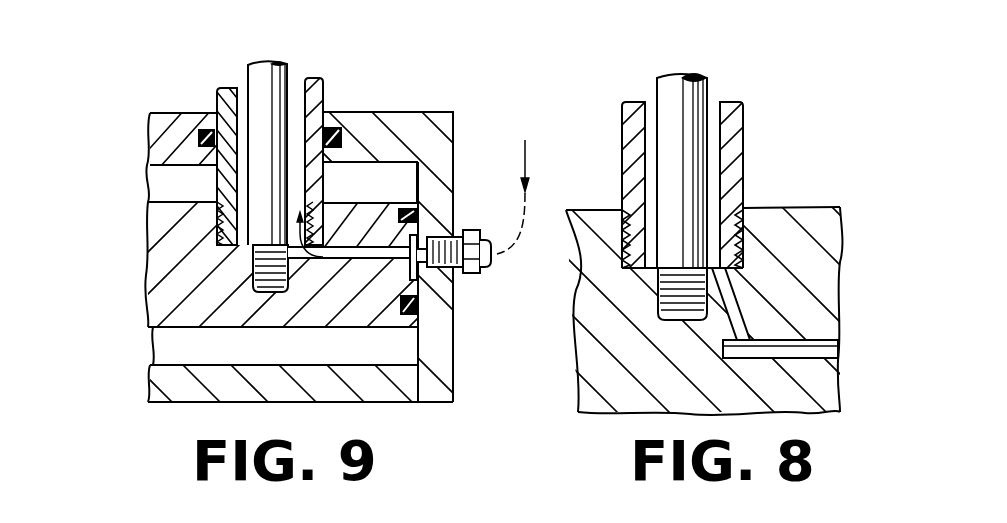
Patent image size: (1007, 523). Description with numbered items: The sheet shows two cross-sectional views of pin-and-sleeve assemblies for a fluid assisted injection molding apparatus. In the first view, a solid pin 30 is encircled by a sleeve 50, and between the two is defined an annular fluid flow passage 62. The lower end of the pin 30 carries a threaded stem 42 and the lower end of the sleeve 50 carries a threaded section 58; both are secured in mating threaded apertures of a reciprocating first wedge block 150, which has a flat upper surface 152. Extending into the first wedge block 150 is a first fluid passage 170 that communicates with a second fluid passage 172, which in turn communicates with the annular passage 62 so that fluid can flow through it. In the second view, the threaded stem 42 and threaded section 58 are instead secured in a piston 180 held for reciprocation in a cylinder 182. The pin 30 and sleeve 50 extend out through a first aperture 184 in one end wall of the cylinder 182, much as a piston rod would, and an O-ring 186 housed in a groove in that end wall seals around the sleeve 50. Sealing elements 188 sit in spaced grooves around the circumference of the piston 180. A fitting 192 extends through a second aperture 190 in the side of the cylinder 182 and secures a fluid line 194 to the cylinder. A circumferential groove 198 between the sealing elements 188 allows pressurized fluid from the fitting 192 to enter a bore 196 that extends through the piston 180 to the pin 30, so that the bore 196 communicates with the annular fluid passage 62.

In FIG. 9, the sleeve 50 is at (233, 88).
In FIG. 8, the sleeve 50 is at (733, 129).
In FIG. 9, the solid pin 30 is at (291, 26).
In FIG. 8, the solid pin 30 is at (777, 26).
In FIG. 9, the annular fluid flow passage 62 is at (299, 93).
In FIG. 9, the first aperture 184 is at (316, 117).
In FIG. 9, the O-ring 186 is at (200, 137).
In FIG. 9, the threaded section 58 is at (218, 212).
In FIG. 8, the threaded section 58 is at (745, 234).
In FIG. 9, the piston 180 is at (140, 268).
In FIG. 9, the threaded stem 42 is at (255, 287).
In FIG. 8, the threaded stem 42 is at (661, 312).
In FIG. 9, the cylinder 182 is at (143, 382).
In FIG. 9, the sealing elements 188 is at (407, 215).
In FIG. 9, the groove 198 is at (345, 248).
In FIG. 9, the second aperture 190 is at (440, 229).
In FIG. 9, the bore 196 is at (411, 278).
In FIG. 9, the fitting 192 is at (471, 274).
In FIG. 9, the fluid line 194 is at (531, 188).
In FIG. 8, the flat upper surface 152 is at (770, 207).
In FIG. 8, the first wedge block 150 is at (847, 196).
In FIG. 8, the second fluid passage 172 is at (741, 312).
In FIG. 8, the first fluid passage 170 is at (838, 350).